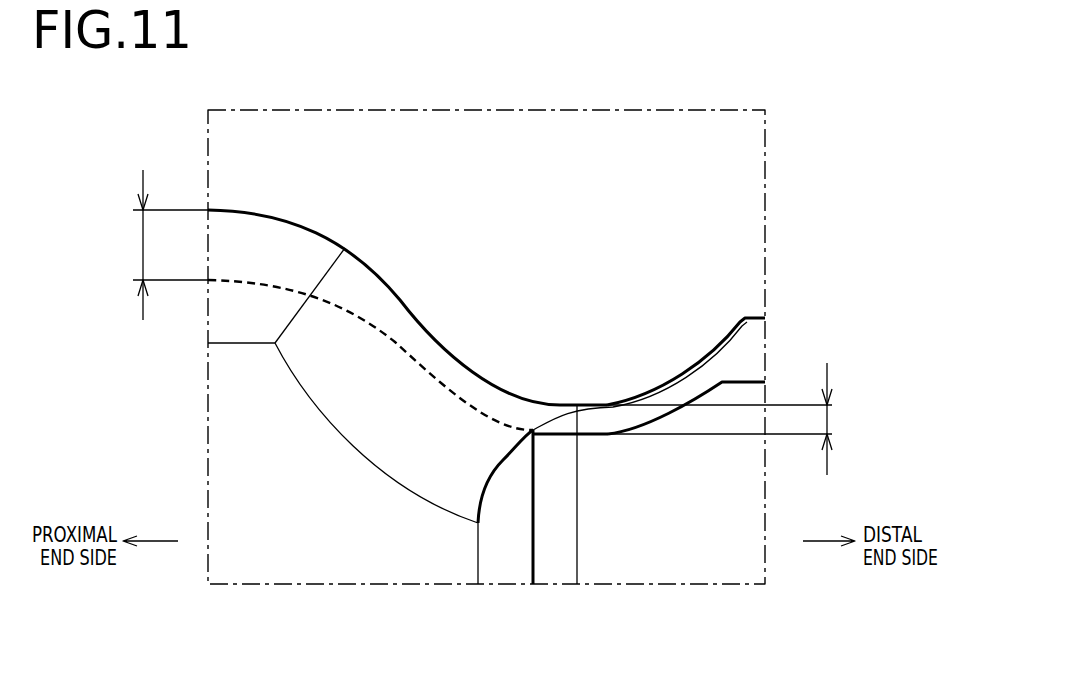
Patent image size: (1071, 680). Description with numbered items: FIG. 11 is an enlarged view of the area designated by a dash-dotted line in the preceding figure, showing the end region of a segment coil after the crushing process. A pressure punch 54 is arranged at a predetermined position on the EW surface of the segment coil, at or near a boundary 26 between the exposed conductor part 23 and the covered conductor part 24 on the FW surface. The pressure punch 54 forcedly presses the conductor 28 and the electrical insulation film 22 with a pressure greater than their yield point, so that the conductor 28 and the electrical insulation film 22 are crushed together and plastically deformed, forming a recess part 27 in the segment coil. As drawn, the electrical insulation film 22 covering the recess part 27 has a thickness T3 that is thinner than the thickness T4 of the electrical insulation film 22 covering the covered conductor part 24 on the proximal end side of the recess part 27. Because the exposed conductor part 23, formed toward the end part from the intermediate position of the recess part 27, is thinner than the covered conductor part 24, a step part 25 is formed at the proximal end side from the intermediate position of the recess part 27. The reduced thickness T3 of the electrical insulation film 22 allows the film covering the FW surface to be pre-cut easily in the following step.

The electrical insulation film 22 is at (747, 358).
The exposed conductor part 23 is at (670, 547).
The covered conductor part 24 is at (353, 558).
The step part 25 is at (465, 372).
The boundary 26 is at (532, 537).
The recess part 27 is at (560, 402).
The conductor 28 is at (682, 534).
The pressure punch 54 is at (525, 152).
The thickness T3 is at (844, 419).
The thickness T4 is at (155, 245).